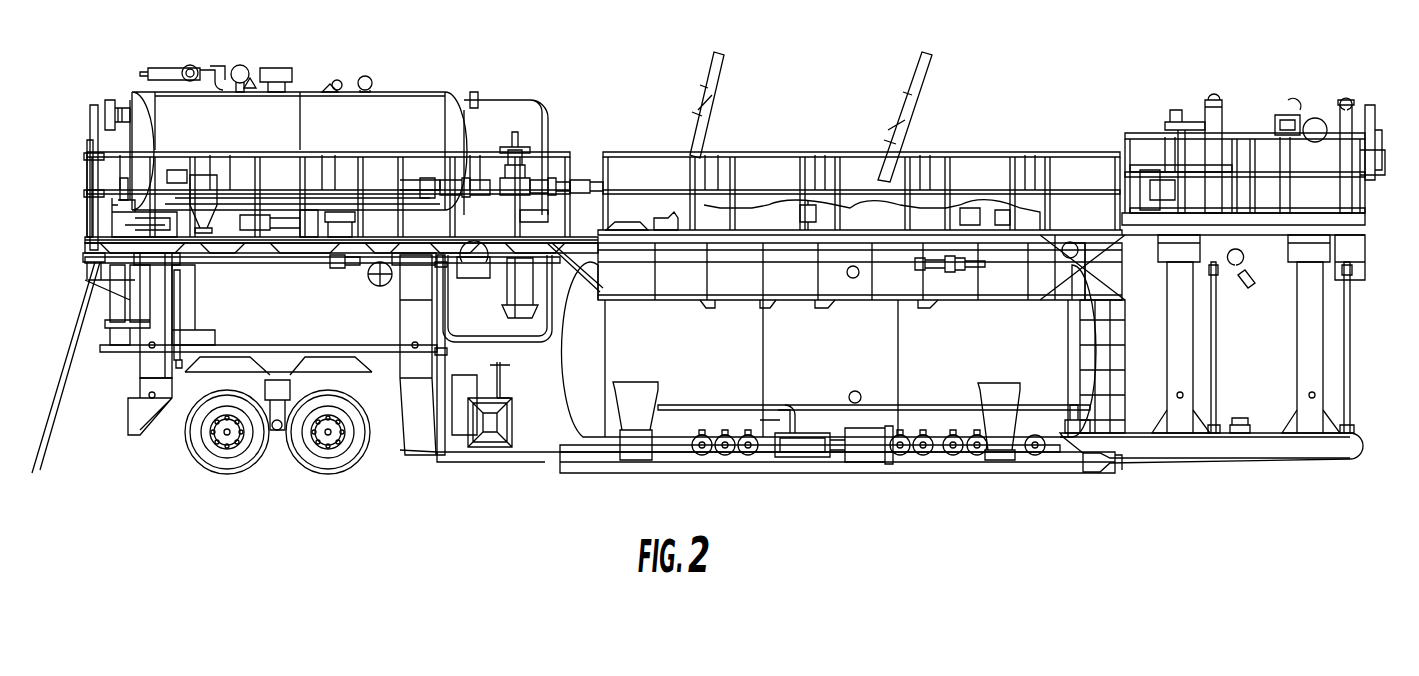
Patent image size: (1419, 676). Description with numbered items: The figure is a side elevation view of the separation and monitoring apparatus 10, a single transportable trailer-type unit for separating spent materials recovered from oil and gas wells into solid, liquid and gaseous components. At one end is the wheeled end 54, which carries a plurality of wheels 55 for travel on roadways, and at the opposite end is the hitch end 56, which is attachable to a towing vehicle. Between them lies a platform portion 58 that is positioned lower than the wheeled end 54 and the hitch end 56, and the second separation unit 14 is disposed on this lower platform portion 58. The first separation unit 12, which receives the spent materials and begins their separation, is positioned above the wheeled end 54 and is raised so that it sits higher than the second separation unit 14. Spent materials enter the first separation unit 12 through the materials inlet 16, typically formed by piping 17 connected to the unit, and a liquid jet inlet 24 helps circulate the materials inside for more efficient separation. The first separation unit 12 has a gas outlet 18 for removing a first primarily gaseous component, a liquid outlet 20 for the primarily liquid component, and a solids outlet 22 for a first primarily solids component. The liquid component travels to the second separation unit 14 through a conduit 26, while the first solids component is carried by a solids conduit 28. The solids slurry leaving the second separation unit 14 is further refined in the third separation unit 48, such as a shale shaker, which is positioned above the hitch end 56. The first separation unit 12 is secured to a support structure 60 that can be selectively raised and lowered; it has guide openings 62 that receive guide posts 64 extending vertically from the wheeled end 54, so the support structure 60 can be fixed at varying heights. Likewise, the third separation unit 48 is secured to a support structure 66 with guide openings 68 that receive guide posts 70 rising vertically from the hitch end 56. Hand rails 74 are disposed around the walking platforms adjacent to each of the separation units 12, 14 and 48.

The separation and monitoring apparatus 10 is at (1180, 54).
The first separation unit 12 is at (400, 92).
The second separation unit 14 is at (958, 357).
The materials inlet 16 is at (130, 148).
The piping 17 is at (92, 132).
The gas outlet 18 is at (506, 103).
The liquid outlet 20 is at (462, 185).
The solids outlet 22 is at (342, 208).
The liquid jet inlet 24 is at (120, 205).
The conduit 26 is at (498, 178).
The solids conduit 28 is at (330, 215).
The third separation unit 48 is at (1225, 122).
The wheeled end 54 is at (140, 400).
The wheels 55 is at (237, 457).
The hitch end 56 is at (1325, 465).
The platform portion 58 is at (965, 468).
The support structure 60 is at (212, 250).
The guide openings 62 is at (152, 265).
The guide posts 64 is at (413, 322).
The support structure 66 is at (1285, 230).
The guide openings 68 is at (1170, 250).
The guide posts 70 is at (1175, 330).
The hand rails 74 is at (548, 152).